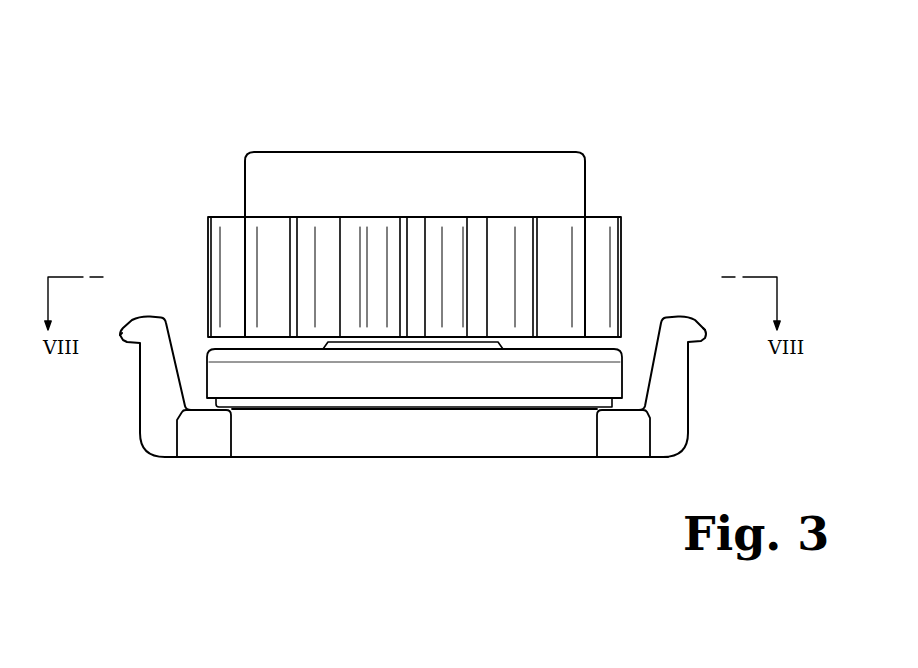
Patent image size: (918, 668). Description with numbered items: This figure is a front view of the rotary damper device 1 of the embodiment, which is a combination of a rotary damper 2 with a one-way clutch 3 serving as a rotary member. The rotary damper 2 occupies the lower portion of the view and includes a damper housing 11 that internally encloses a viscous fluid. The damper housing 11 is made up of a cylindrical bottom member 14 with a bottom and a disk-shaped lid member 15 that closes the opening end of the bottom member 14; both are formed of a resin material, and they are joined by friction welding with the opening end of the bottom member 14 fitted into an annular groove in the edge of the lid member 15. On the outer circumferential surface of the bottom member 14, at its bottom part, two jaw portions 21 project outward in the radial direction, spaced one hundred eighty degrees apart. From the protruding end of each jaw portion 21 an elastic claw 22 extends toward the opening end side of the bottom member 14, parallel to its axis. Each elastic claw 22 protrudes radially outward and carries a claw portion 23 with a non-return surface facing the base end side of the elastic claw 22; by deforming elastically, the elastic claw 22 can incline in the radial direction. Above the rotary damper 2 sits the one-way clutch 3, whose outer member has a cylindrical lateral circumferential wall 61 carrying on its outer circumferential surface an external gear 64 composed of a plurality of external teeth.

The rotary damper device 1 is at (527, 103).
The rotary damper 2 is at (500, 463).
The one-way clutch 3 is at (583, 150).
The damper housing 11 is at (307, 458).
The bottom member 14 is at (385, 442).
The lid member 15 is at (435, 390).
The jaw portion 21 is at (208, 442).
The elastic claw 22 is at (138, 413).
The claw portion 23 is at (128, 340).
The lateral circumferential wall 61 is at (258, 185).
The external gear 64 is at (227, 240).